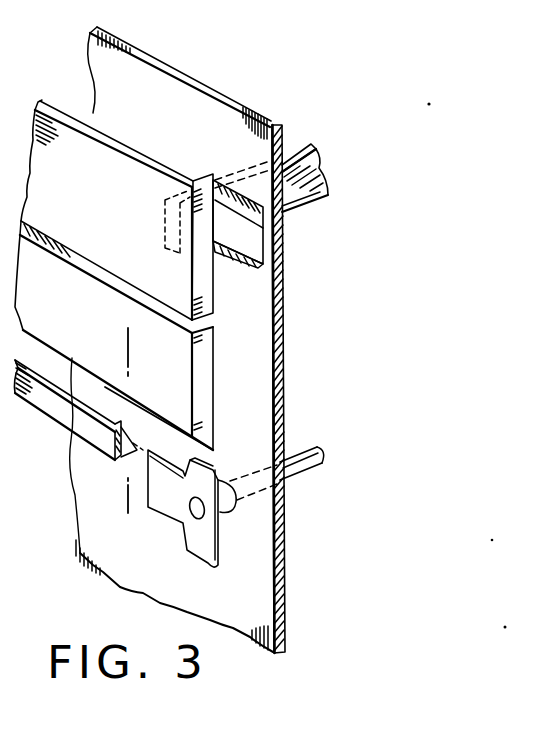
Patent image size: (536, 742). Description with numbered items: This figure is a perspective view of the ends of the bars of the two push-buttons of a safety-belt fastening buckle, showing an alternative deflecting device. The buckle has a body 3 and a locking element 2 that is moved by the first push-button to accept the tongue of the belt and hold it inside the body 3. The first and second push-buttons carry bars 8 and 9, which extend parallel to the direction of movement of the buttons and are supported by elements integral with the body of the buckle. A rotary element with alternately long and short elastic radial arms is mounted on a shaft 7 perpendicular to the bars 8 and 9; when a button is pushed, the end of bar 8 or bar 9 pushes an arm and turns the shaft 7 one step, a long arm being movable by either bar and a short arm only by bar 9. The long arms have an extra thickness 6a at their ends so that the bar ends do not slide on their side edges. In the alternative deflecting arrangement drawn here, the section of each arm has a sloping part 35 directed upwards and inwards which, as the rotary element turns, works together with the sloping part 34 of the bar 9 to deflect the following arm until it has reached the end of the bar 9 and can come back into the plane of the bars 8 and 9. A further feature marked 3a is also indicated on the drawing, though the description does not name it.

The locking element 2 is at (297, 197).
The body 3 is at (276, 352).
The slot in plate 3a is at (30, 378).
The extra thickness 6a is at (61, 422).
The shaft 7 is at (296, 465).
The bar 8 is at (106, 226).
The bar 9 is at (169, 378).
The sloping part 34 is at (115, 380).
The sloping part 35 is at (133, 440).